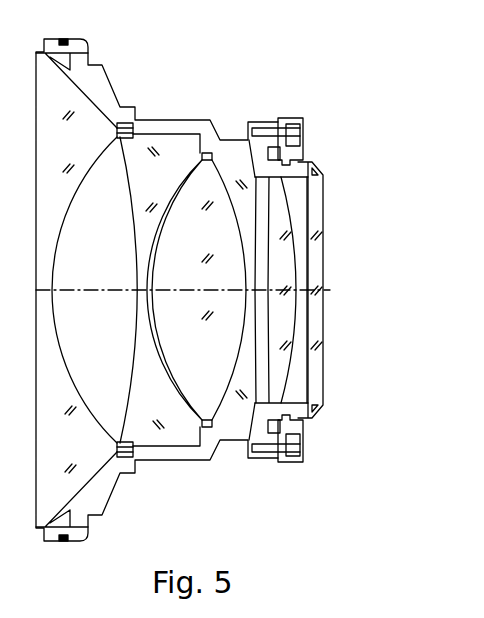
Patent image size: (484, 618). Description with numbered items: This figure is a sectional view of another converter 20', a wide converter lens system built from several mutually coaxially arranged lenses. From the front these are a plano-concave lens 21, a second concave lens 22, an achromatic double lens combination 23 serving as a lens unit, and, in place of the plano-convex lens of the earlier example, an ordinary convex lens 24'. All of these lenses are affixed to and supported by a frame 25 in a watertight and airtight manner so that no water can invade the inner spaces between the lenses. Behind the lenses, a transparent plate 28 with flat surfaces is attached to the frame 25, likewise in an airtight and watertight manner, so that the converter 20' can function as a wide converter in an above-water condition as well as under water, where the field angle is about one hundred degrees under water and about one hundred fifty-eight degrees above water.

The converter 20' is at (240, 275).
The plano-concave lens 21 is at (93, 130).
The second concave lens 22 is at (173, 157).
The achromatic double lens combination 23 is at (232, 163).
The ordinary convex lens 24' is at (335, 250).
The frame 25 is at (175, 458).
The transparent plate 28 is at (318, 372).